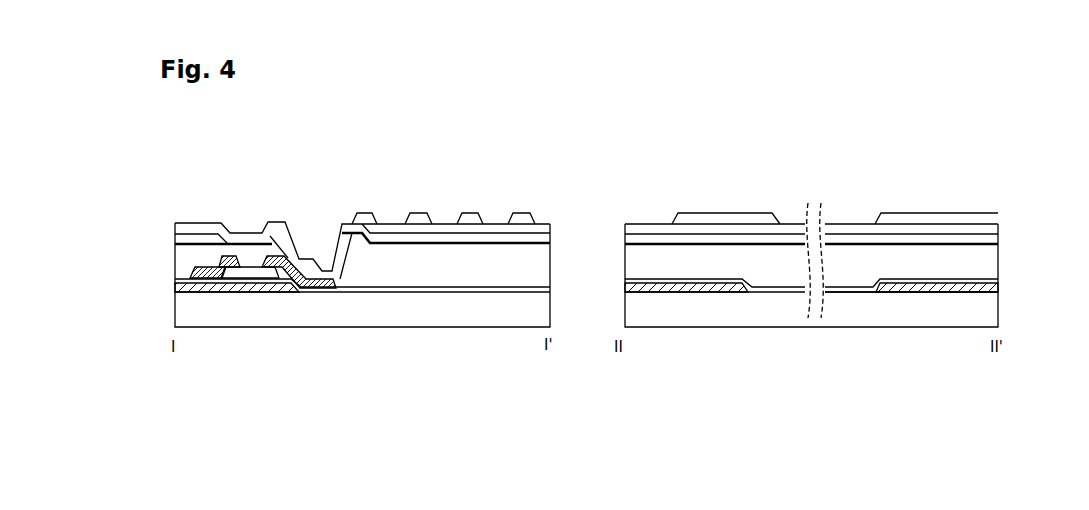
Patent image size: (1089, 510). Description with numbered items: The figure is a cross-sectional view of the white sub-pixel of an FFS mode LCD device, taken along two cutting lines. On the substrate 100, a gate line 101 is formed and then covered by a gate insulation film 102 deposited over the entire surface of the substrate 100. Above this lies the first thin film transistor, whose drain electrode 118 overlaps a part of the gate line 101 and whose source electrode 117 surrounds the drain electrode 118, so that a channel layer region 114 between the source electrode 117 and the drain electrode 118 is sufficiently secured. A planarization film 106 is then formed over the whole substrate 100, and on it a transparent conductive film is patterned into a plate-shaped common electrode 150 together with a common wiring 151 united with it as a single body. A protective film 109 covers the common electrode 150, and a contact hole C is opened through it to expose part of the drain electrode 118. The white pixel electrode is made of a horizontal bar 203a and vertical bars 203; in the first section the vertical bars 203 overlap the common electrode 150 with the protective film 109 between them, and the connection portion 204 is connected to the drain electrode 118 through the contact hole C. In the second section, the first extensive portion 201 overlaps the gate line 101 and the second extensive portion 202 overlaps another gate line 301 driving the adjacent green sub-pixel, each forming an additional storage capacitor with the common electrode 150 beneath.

The substrate 100 is at (280, 322).
The gate line 101 is at (175, 285).
The gate insulation film 102 is at (177, 279).
The planarization film 106 is at (485, 262).
The protective film 109 is at (210, 228).
The channel layer region 114 is at (215, 259).
The source electrode 117 is at (213, 243).
The drain electrode 118 is at (265, 252).
The common electrode 150 is at (502, 238).
The common wiring 151 is at (193, 237).
The first extensive portion 201 is at (690, 212).
The second extensive portion 202 is at (980, 212).
The vertical bar 203 is at (465, 213).
The horizontal bar 203a is at (742, 212).
The connection portion 204 is at (340, 225).
The gate line 301 is at (1000, 286).
The contact hole C is at (308, 226).